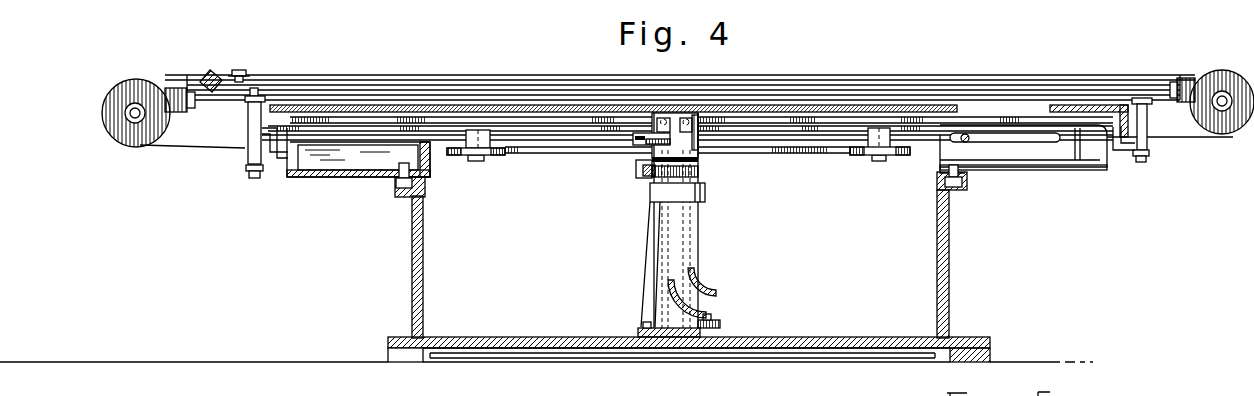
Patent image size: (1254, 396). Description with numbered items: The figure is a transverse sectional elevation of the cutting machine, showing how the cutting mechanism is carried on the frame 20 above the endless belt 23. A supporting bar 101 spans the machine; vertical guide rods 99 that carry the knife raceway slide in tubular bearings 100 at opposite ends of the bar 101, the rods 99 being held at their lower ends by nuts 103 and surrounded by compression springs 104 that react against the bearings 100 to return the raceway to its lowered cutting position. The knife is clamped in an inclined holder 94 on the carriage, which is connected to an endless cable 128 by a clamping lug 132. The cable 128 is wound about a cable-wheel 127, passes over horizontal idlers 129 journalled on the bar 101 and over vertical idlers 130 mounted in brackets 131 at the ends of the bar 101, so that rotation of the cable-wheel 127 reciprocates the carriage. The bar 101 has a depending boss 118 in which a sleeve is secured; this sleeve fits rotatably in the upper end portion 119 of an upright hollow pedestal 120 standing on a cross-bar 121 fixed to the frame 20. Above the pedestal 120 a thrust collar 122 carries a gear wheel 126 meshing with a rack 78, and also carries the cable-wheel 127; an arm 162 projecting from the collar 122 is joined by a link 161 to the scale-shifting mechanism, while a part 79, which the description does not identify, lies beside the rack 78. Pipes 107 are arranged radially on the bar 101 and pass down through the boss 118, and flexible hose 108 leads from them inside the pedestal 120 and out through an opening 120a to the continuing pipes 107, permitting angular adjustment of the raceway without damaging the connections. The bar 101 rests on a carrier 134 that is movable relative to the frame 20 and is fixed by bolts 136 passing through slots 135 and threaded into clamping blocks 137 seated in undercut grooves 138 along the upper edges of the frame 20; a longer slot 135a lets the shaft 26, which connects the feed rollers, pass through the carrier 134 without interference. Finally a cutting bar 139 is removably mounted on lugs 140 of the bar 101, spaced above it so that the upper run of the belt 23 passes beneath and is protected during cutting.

The frame 20 is at (413, 267).
The endless belt 23 is at (826, 105).
The shaft 26 is at (966, 134).
The rack 78 is at (644, 183).
The washer 79 is at (634, 177).
The holder 94 is at (213, 72).
The guide rods 99 is at (250, 112).
The tubular bearings 100 is at (252, 140).
The supporting bar 101 is at (310, 117).
The nuts 103 is at (253, 180).
The compression springs 104 is at (266, 163).
The pipes 107 is at (520, 131).
The flexible hose 108 is at (702, 297).
The boss 118 is at (688, 116).
The upper end portion 119 is at (705, 191).
The pedestal 120 is at (657, 298).
The opening 120a is at (700, 322).
The cross-bar 121 is at (817, 337).
The thrust collar 122 is at (699, 161).
The gear wheel 126 is at (700, 174).
The cable-wheel 127 is at (818, 157).
The endless cable 128 is at (348, 81).
The horizontal idlers 129 is at (492, 157).
The vertical idlers 130 is at (130, 139).
The brackets 131 is at (174, 88).
The clamping lug 132 is at (241, 70).
The carrier 134 is at (1062, 170).
The slots 135 is at (349, 173).
The slot 135a is at (1035, 140).
The bolts 136 is at (398, 166).
The clamping blocks 137 is at (420, 192).
The undercut grooves 138 is at (405, 192).
The cutting bar 139 is at (421, 108).
The lugs 140 is at (401, 84).
The link 161 is at (647, 132).
The arm 162 is at (638, 143).